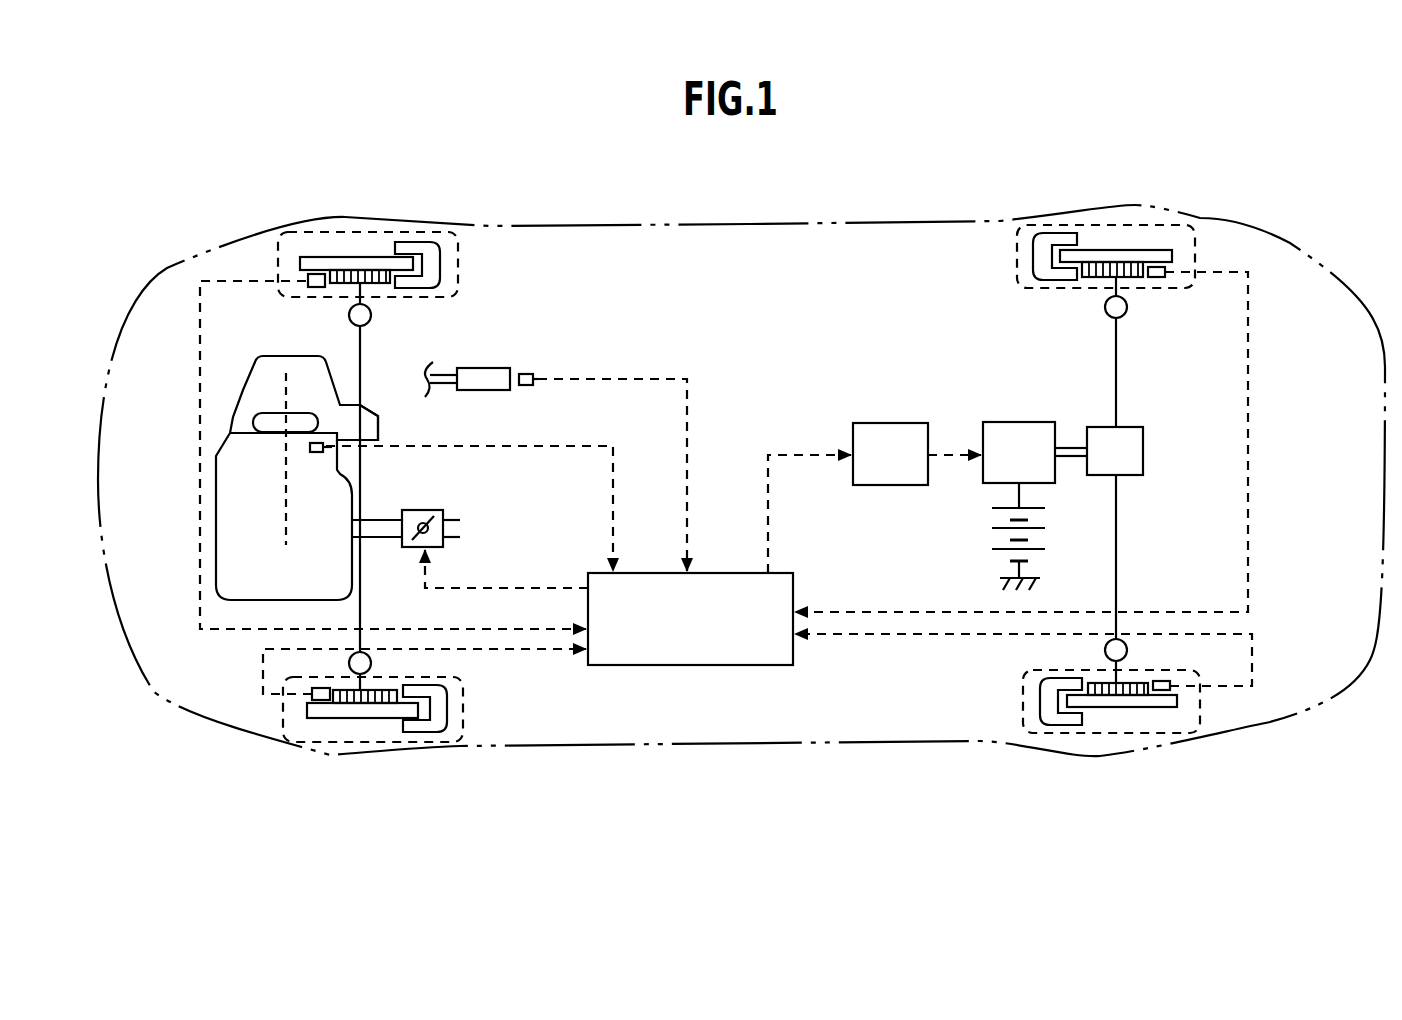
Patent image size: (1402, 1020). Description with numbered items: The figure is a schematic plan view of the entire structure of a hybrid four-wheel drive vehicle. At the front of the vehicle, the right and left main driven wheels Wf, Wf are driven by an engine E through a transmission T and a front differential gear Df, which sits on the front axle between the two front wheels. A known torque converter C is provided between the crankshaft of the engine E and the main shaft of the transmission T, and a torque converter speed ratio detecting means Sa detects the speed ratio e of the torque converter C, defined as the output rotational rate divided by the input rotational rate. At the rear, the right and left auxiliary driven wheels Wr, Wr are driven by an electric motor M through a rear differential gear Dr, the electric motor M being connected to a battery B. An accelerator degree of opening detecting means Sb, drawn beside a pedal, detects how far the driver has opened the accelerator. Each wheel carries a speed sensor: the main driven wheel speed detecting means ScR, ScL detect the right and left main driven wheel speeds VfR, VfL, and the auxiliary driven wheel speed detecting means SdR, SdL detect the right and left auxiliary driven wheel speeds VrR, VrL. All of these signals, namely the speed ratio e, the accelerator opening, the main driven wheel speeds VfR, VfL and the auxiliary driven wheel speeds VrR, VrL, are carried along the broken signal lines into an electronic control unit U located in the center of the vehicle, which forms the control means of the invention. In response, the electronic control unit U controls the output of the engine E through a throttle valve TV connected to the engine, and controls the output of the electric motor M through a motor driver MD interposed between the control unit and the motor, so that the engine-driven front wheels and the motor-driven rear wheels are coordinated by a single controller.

The main driven wheel Wf is at (330, 233).
The auxiliary driven wheel Wr is at (1085, 227).
The main driven wheel speed detecting means ScR is at (307, 283).
The main driven wheel speed detecting means ScL is at (312, 694).
The auxiliary driven wheel speed detecting means SdR is at (1157, 280).
The auxiliary driven wheel speed detecting means SdL is at (1157, 695).
The transmission T is at (268, 398).
The front differential gear Df is at (353, 416).
The torque converter C is at (262, 432).
The engine E is at (284, 486).
The torque converter speed ratio detecting means Sa is at (316, 452).
The throttle valve TV is at (418, 510).
The accelerator degree of opening detecting means Sb is at (535, 374).
The electronic control unit U is at (690, 619).
The motor driver MD is at (890, 454).
The electric motor M is at (1035, 452).
The rear differential gear Dr is at (1145, 440).
The battery B is at (1042, 530).
The speed ratio e is at (474, 508).
The main driven wheel speed VfR is at (393, 455).
The main driven wheel speed VfL is at (424, 671).
The auxiliary driven wheel speed VrR is at (1021, 442).
The auxiliary driven wheel speed VrL is at (1023, 660).